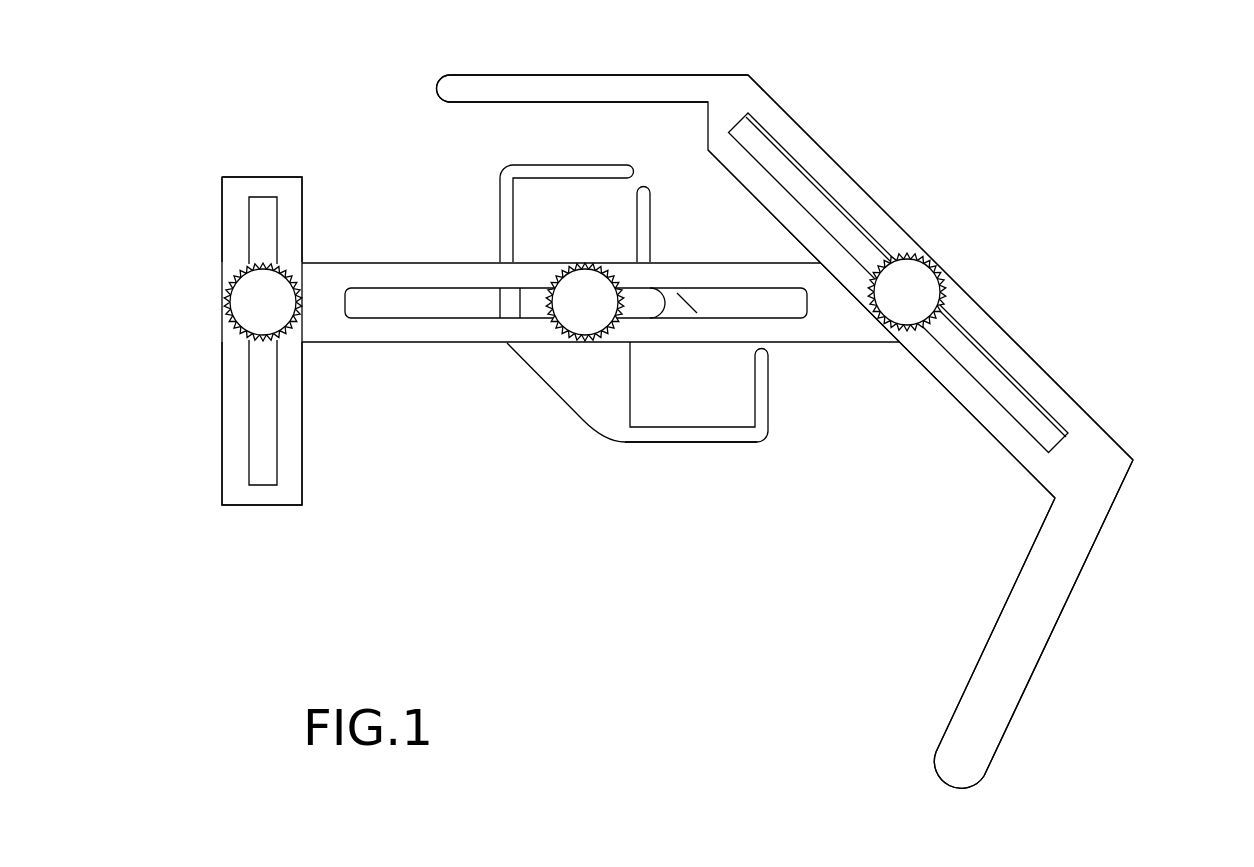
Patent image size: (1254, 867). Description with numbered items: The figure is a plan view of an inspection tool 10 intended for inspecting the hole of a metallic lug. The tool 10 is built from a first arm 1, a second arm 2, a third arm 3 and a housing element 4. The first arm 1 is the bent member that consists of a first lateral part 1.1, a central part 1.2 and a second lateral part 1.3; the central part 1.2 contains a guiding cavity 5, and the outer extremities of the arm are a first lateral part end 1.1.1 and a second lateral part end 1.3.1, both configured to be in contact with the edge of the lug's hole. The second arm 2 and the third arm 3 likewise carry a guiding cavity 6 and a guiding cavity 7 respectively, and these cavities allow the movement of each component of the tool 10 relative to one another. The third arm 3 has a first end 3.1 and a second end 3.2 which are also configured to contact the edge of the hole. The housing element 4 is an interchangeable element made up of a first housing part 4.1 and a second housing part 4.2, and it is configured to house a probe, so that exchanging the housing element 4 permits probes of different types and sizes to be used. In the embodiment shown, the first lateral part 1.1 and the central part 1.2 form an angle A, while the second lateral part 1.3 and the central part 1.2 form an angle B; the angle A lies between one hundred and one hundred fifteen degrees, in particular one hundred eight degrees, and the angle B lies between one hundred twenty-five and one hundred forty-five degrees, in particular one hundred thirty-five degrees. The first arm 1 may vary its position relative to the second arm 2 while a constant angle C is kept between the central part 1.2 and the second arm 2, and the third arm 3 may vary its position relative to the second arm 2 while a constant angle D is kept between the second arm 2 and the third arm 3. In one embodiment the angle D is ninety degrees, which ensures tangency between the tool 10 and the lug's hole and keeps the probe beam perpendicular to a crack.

The first arm 1 is at (1030, 153).
The first lateral part 1.1 is at (707, 75).
The first lateral part end 1.1.1 is at (451, 88).
The central part 1.2 is at (1057, 386).
The second lateral part 1.3 is at (1050, 638).
The second lateral part end 1.3.1 is at (927, 770).
The second arm 2 is at (382, 343).
The third arm 3 is at (222, 468).
The first end 3.1 is at (245, 177).
The second end 3.2 is at (245, 505).
The housing element 4 is at (556, 442).
The first housing part 4.1 is at (712, 470).
The second housing part 4.2 is at (472, 188).
The guiding cavity 5 is at (853, 233).
The guiding cavity 6 is at (433, 310).
The guiding cavity 7 is at (262, 248).
The inspection tool 10 is at (536, 580).
The angle A is at (833, 173).
The angle B is at (1020, 370).
The angle C is at (810, 270).
The angle D is at (388, 270).